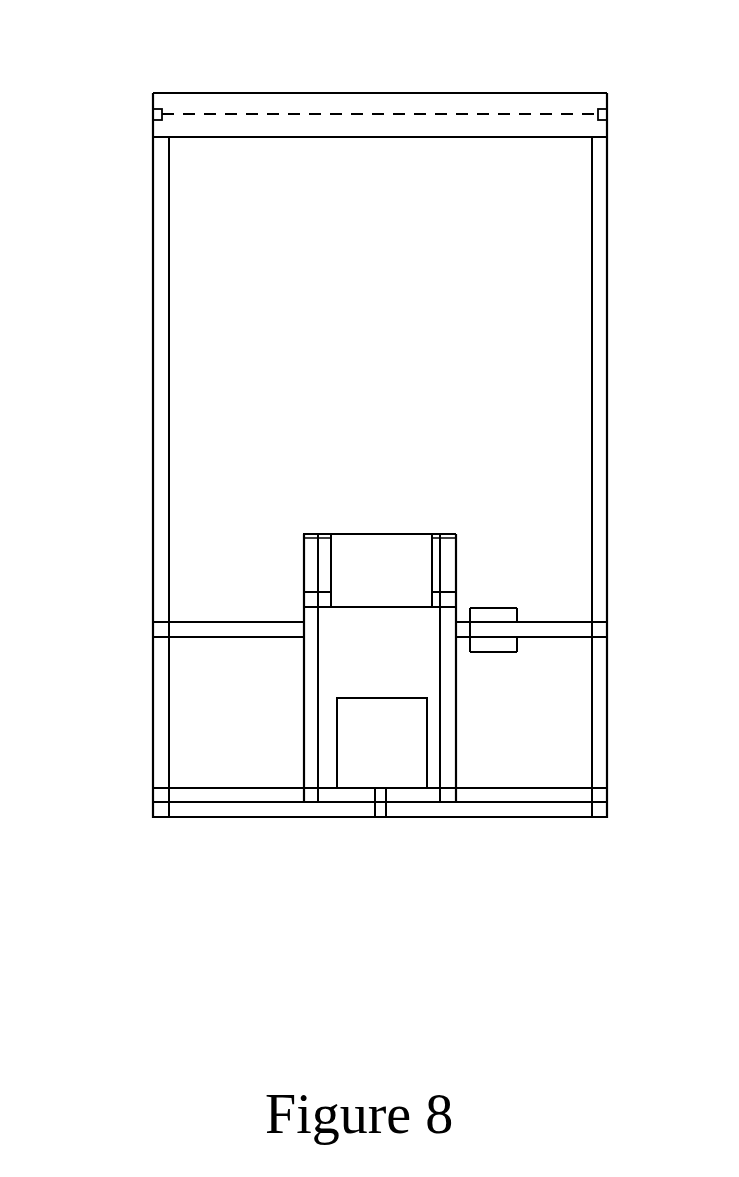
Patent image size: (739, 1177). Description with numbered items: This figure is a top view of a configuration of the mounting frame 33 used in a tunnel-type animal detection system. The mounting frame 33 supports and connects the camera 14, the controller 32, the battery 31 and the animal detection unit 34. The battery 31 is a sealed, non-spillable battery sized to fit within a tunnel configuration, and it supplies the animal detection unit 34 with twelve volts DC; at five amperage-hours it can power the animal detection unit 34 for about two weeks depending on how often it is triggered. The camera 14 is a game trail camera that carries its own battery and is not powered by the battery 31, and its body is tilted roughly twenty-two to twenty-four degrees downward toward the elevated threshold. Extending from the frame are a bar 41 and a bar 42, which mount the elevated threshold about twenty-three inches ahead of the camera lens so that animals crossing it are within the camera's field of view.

The camera 14 is at (427, 778).
The battery 31 is at (432, 582).
The controller 32 is at (518, 615).
The mounting frame 33 is at (187, 818).
The animal detection unit 34 is at (588, 92).
The bar 41 is at (153, 247).
The bar 42 is at (607, 260).